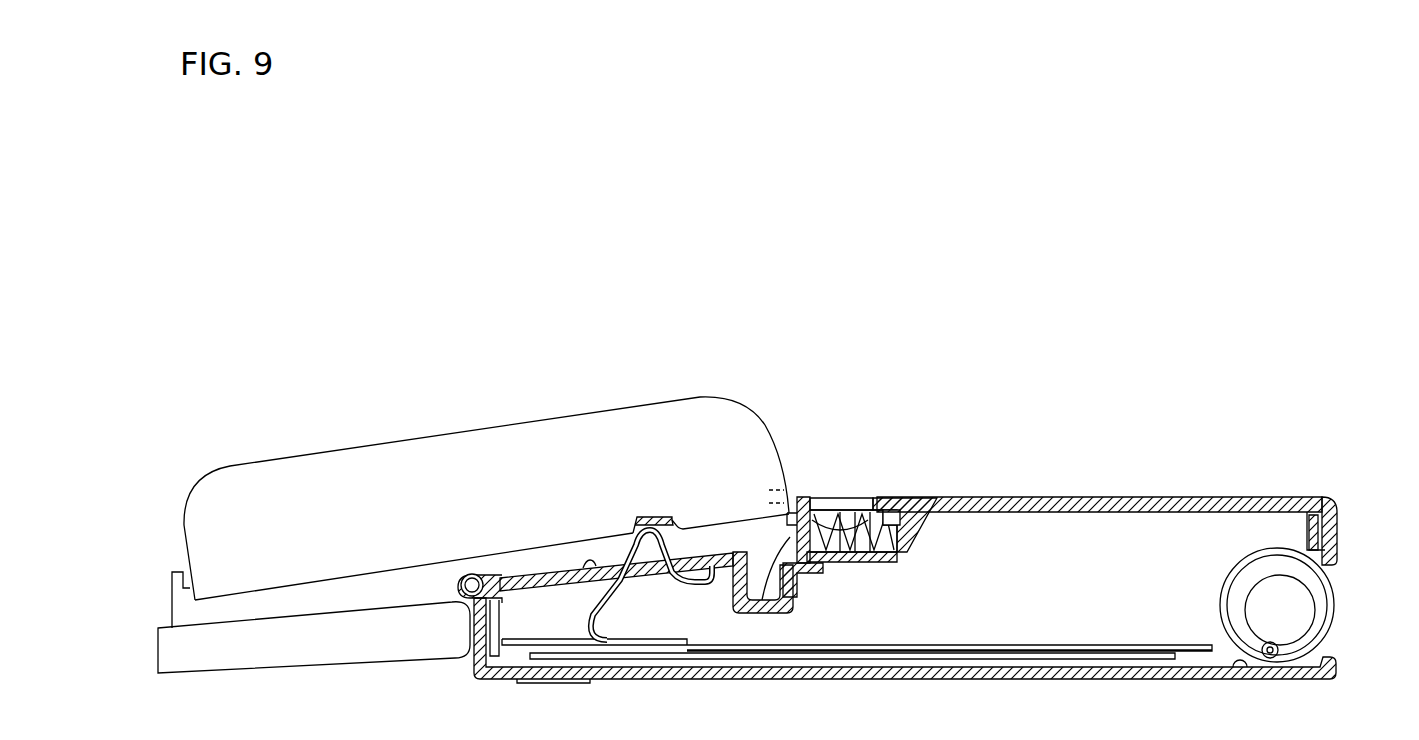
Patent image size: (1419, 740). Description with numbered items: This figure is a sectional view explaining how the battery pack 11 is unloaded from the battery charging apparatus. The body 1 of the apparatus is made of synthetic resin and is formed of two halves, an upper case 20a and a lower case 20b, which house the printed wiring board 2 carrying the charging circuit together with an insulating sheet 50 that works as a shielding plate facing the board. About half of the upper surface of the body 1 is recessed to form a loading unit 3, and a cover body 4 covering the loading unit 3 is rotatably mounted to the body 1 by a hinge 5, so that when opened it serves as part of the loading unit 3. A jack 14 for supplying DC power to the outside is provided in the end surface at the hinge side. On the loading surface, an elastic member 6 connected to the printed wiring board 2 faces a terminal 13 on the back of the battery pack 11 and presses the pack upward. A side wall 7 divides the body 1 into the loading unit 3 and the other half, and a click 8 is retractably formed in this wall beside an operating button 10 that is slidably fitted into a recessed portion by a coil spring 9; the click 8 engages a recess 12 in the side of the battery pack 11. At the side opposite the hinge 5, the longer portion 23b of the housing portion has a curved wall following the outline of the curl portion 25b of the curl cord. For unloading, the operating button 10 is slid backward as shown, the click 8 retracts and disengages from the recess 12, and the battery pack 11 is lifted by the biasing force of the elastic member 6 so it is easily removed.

The body 1 is at (1167, 497).
The printed wiring board 2 is at (868, 640).
The loading unit 3 is at (578, 566).
The cover body 4 is at (347, 653).
The hinge 5 is at (460, 604).
The elastic member 6 is at (622, 596).
The side wall 7 is at (759, 613).
The click 8 is at (788, 512).
The coil spring 9 is at (925, 498).
The operating button 10 is at (873, 502).
The battery pack 11 is at (587, 423).
The recess 12 is at (767, 487).
The terminal 13 is at (667, 513).
The jack 14 is at (472, 655).
The upper case 20a is at (1050, 495).
The lower case 20b is at (1110, 678).
The longer portion of the first housing portion 23b is at (1263, 605).
The curl portion 25b is at (1307, 577).
The insulating sheet 50 is at (983, 660).